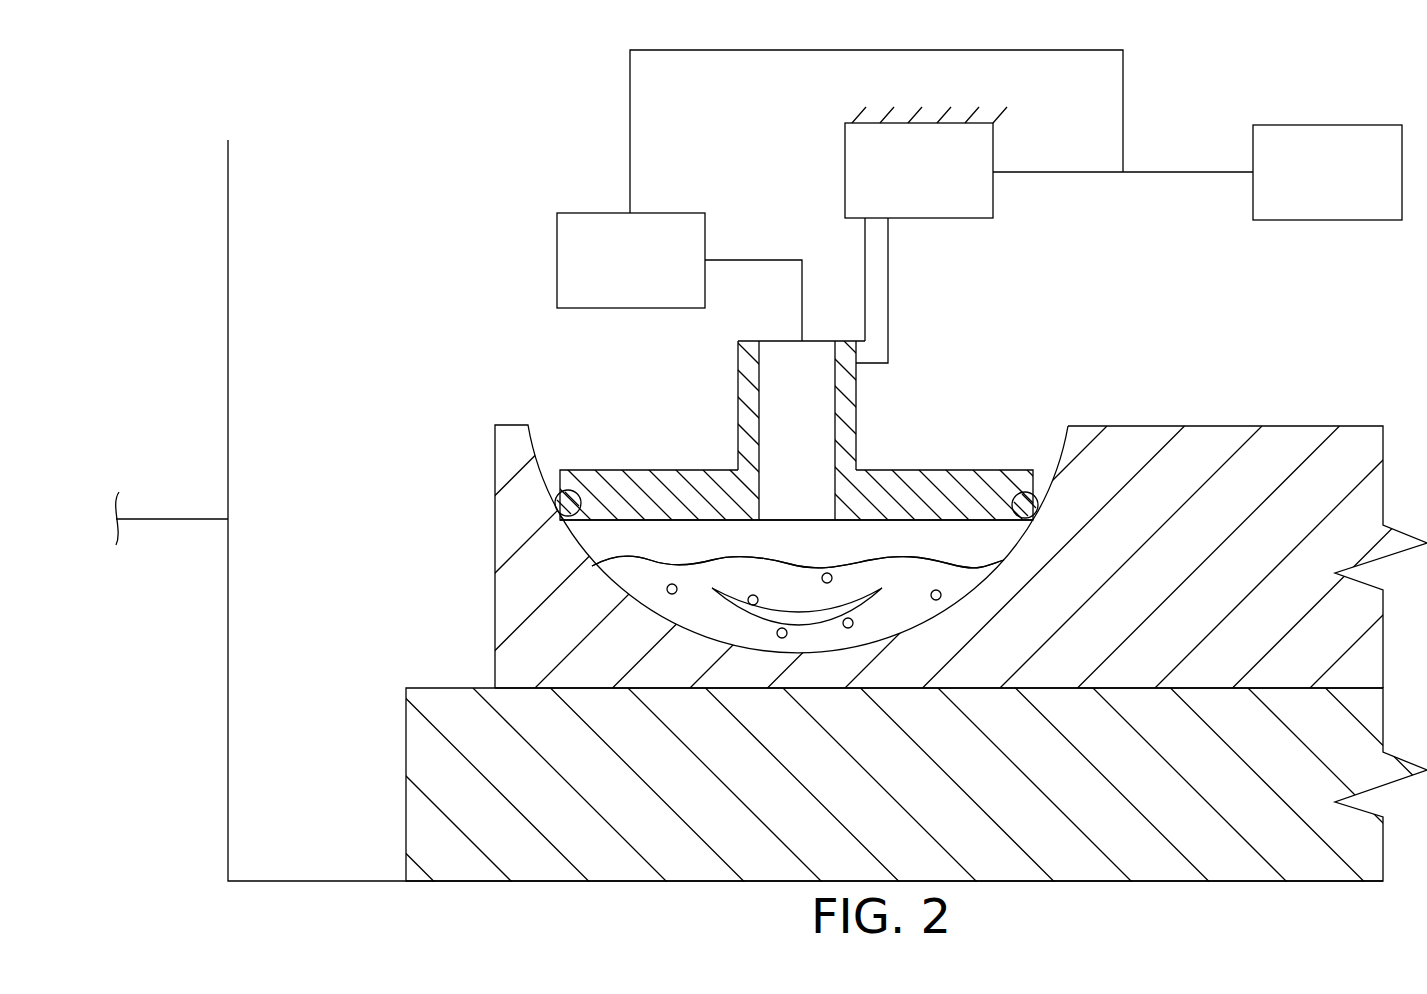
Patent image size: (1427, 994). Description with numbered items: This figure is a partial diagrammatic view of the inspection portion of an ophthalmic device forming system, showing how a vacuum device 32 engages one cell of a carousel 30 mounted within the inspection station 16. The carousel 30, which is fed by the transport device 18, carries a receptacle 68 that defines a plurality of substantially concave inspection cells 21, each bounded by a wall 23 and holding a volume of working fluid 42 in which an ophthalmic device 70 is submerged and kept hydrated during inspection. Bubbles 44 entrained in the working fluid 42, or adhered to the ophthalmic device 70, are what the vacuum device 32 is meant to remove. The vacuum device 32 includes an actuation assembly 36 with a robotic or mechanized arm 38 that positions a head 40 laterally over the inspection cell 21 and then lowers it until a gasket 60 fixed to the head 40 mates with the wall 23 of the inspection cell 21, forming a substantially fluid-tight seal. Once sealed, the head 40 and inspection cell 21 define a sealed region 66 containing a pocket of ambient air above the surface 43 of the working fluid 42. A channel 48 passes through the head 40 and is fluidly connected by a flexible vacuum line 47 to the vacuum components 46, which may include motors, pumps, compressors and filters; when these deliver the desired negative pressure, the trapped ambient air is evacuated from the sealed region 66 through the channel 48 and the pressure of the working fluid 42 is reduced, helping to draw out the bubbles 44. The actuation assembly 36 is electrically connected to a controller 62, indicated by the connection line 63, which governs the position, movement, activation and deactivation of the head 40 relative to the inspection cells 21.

The inspection station 16 is at (246, 848).
The transport device 18 is at (173, 519).
The inspection cell 21 is at (798, 429).
The wall 23 is at (560, 500).
The carousel 30 is at (406, 752).
The vacuum device 32 is at (876, 229).
The actuation assembly 36 is at (952, 213).
The arm 38 is at (888, 290).
The head 40 is at (946, 470).
The working fluid 42 is at (626, 594).
The surface 43 is at (917, 572).
The bubbles 44 is at (822, 576).
The vacuum components 46 is at (666, 305).
The vacuum line 47 is at (730, 258).
The channel 48 is at (780, 434).
The gasket 60 is at (1023, 493).
The controller 62 is at (1362, 210).
The connection line 63 is at (1185, 172).
The sealed region 66 is at (612, 528).
The receptacle 68 is at (1211, 426).
The ophthalmic device 70 is at (863, 592).